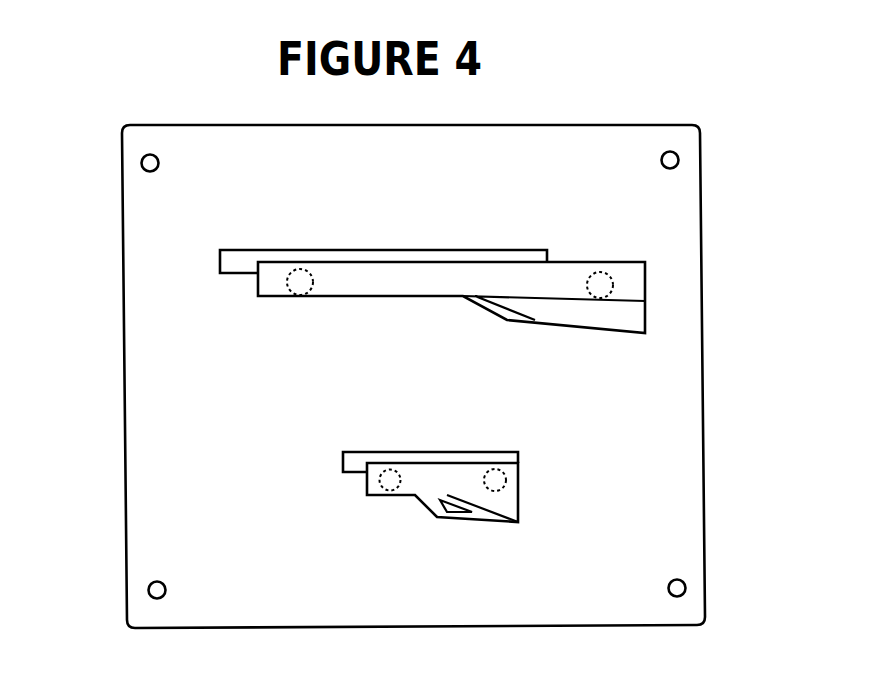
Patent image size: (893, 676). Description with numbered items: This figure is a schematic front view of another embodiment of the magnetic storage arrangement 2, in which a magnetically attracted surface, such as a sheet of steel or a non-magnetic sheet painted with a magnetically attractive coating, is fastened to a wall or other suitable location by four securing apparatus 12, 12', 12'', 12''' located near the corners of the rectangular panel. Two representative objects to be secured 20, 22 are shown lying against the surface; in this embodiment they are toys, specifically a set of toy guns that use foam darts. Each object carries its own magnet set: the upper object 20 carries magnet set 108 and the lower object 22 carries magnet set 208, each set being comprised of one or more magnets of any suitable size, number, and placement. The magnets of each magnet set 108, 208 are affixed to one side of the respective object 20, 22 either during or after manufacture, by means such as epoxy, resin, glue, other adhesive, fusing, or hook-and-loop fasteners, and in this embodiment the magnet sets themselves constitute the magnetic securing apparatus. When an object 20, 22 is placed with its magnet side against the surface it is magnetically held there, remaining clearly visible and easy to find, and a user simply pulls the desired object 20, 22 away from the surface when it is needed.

The device / mounting assembly 2 is at (108, 268).
The securing apparatus 12 is at (96, 132).
The securing apparatus 12' is at (107, 566).
The securing apparatus 12'' is at (731, 127).
The securing apparatus 12''' is at (738, 560).
The object to be secured 20 is at (233, 262).
The magnet set 108 is at (596, 292).
The object to be secured 22 is at (365, 467).
The magnet set 208 is at (497, 472).